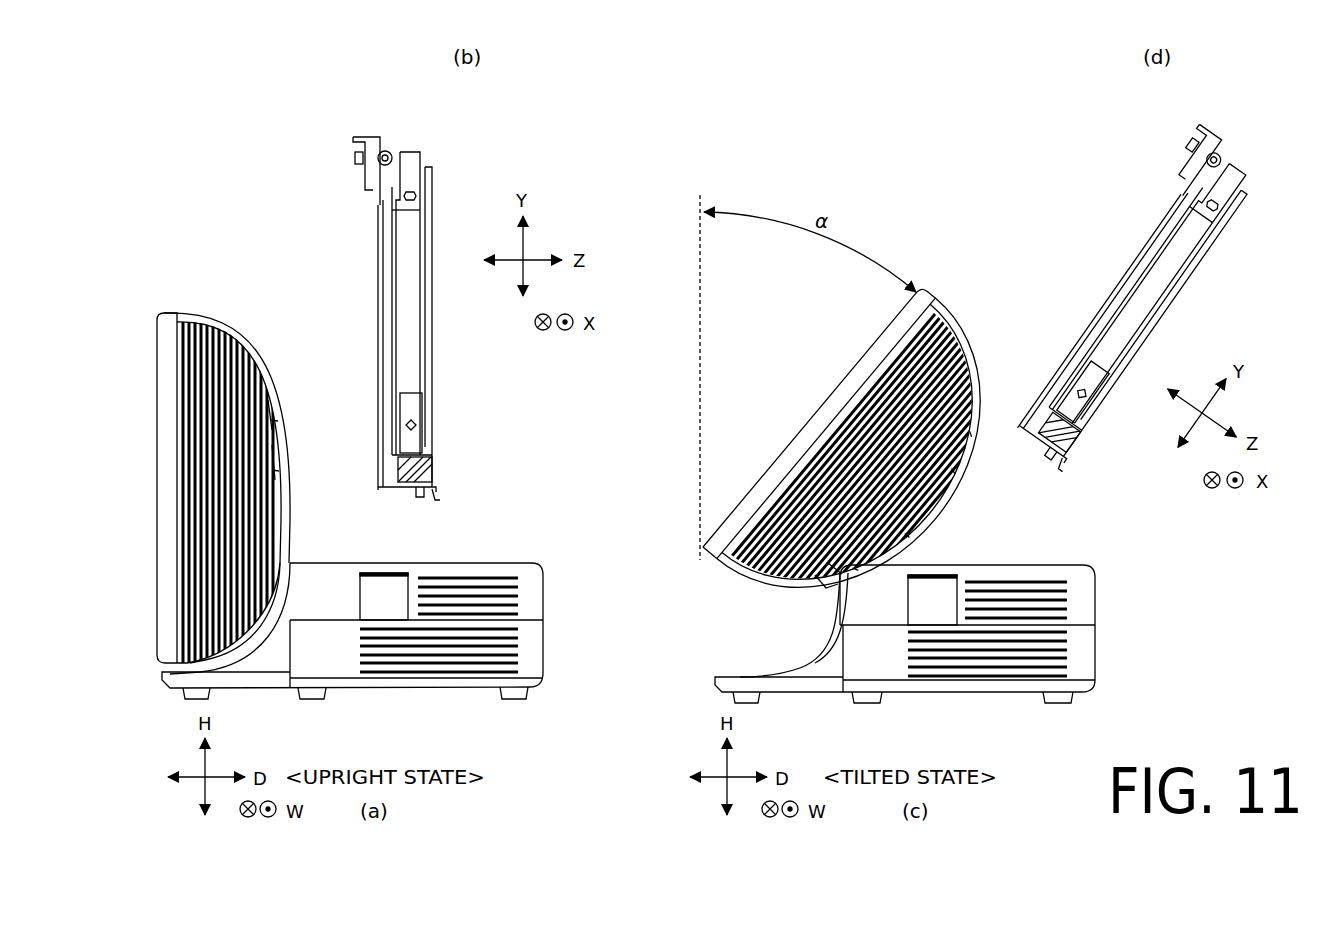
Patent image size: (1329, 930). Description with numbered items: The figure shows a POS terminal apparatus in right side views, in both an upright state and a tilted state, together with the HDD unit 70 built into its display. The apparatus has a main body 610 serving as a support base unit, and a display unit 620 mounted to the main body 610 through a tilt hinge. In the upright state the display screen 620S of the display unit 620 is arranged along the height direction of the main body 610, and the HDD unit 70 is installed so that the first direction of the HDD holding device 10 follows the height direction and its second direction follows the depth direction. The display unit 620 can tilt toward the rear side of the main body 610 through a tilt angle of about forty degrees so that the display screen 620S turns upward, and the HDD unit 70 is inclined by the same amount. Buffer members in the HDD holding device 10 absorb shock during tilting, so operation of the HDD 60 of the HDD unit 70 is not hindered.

The HDD holding device 10 is at (376, 210).
The HDD 60 is at (440, 205).
The HDD unit 70 is at (425, 95).
The main body 610 is at (545, 660).
The display unit 620 is at (175, 612).
The display screen 620S is at (157, 443).